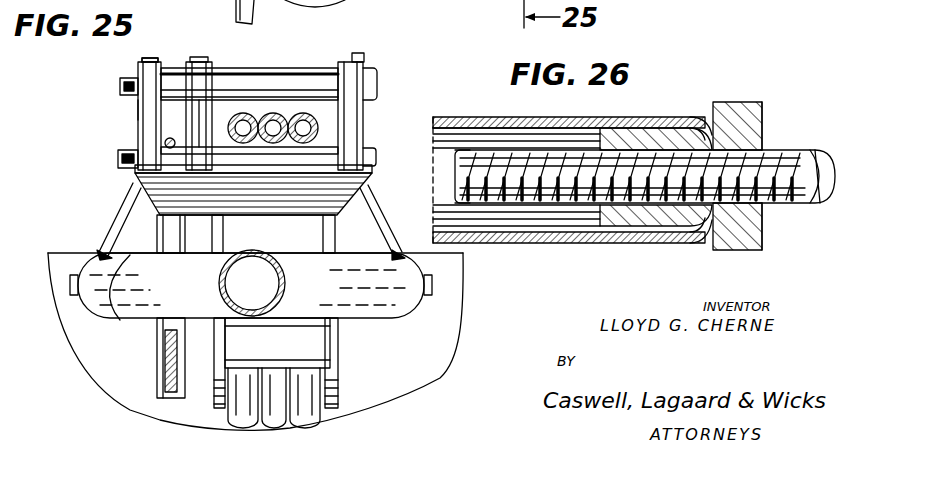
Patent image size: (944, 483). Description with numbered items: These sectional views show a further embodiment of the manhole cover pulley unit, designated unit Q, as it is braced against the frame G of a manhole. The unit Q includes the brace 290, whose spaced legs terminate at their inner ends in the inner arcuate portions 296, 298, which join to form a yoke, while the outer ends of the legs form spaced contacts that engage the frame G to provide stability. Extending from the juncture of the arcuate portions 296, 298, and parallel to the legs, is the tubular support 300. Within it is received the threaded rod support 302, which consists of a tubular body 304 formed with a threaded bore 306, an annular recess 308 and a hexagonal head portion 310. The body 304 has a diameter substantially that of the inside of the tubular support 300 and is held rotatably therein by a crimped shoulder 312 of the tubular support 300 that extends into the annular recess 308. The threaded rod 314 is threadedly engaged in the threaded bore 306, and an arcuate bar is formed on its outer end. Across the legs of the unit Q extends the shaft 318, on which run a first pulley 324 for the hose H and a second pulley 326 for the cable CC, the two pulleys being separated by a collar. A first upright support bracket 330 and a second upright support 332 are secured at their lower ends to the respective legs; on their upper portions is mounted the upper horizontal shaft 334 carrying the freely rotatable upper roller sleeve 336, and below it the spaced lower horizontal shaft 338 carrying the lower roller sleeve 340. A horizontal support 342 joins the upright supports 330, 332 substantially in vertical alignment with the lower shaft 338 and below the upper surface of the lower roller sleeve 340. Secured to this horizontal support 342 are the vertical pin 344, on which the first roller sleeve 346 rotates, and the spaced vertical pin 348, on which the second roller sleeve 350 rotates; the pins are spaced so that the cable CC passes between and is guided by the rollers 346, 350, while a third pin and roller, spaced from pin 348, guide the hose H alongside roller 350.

In FIG. 25, the brace 290 is at (95, 320).
In FIG. 25, the inner arcuate portion 296 is at (398, 318).
In FIG. 25, the inner arcuate portion 298 is at (128, 322).
In FIG. 25, the tubular support 300 is at (274, 309).
In FIG. 26, the tubular support 300 is at (497, 118).
In FIG. 26, the threaded rod support 302 is at (745, 97).
In FIG. 26, the tubular body 304 is at (652, 232).
In FIG. 26, the threaded bore 306 is at (650, 158).
In FIG. 26, the annular recess 308 is at (698, 224).
In FIG. 26, the hexagonal head portion 310 is at (763, 106).
In FIG. 26, the crimped shoulder 312 is at (700, 125).
In FIG. 26, the threaded rod 314 is at (785, 158).
In FIG. 25, the shaft 318 is at (436, 283).
In FIG. 25, the first pulley 324 is at (338, 390).
In FIG. 25, the second pulley 326 is at (158, 387).
In FIG. 25, the first upright support bracket 330 is at (363, 58).
In FIG. 25, the second upright support 332 is at (137, 57).
In FIG. 25, the upper horizontal shaft 334 is at (122, 76).
In FIG. 25, the upper roller sleeve 336 is at (283, 80).
In FIG. 25, the lower horizontal shaft 338 is at (118, 162).
In FIG. 25, the lower roller sleeve 340 is at (238, 165).
In FIG. 25, the horizontal support 342 is at (278, 205).
In FIG. 25, the vertical pin 344 is at (161, 60).
In FIG. 25, the first roller sleeve 346 is at (137, 108).
In FIG. 25, the vertical pin 348 is at (205, 60).
In FIG. 25, the second roller sleeve 350 is at (195, 115).
In FIG. 25, the frame G is at (450, 293).
In FIG. 25, the hose H is at (318, 128).
In FIG. 25, the unit Q is at (94, 110).
In FIG. 25, the cable CC is at (165, 143).